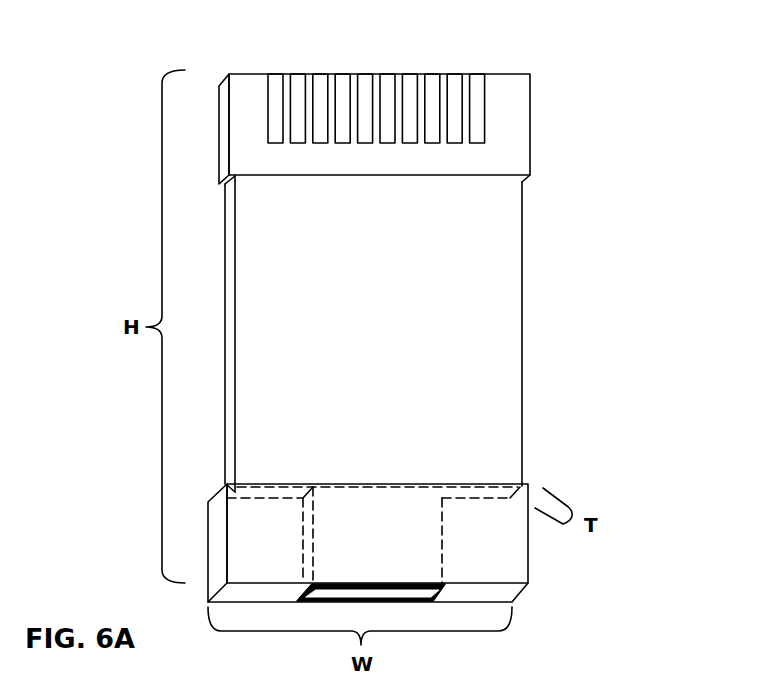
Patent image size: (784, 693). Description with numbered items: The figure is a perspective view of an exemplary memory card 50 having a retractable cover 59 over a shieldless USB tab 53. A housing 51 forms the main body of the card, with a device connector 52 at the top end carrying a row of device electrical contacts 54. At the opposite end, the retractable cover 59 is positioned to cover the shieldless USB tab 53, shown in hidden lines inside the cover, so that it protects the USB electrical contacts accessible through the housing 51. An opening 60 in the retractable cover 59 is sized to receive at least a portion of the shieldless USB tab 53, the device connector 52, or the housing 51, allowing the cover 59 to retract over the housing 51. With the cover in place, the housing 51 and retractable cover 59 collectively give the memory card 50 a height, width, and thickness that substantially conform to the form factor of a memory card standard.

The memory card 50 is at (678, 80).
The housing 51 is at (225, 237).
The device connector 52 is at (523, 131).
The shieldless USB tab 53 is at (433, 548).
The device electrical contacts 54 is at (485, 68).
The retractable cover 59 is at (520, 568).
The opening 60 is at (444, 584).